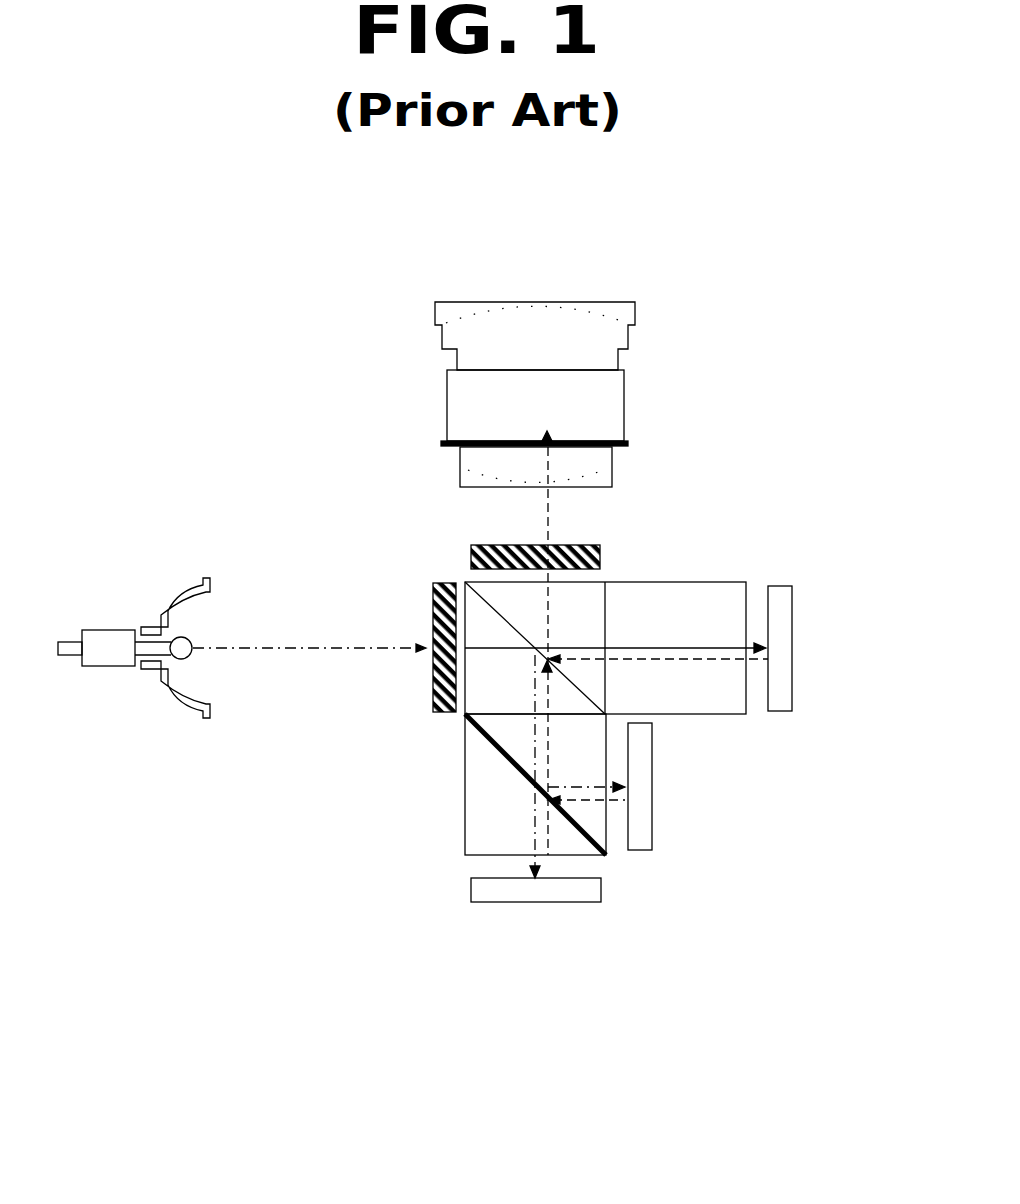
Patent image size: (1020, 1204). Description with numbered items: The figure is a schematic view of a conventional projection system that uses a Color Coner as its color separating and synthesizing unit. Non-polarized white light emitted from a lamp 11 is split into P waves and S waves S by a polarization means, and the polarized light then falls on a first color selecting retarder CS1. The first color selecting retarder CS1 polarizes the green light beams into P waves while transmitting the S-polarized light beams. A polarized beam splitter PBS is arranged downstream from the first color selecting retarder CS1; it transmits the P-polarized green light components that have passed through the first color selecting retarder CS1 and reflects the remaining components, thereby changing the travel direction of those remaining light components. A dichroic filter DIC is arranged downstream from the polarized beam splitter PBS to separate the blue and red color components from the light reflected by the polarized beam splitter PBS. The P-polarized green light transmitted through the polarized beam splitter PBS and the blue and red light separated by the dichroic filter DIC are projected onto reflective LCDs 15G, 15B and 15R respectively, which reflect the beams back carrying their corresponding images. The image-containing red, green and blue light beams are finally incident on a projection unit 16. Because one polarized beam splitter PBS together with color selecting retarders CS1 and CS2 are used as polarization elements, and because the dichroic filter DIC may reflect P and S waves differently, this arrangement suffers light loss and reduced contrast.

The lamp 11 is at (134, 617).
The S wave S is at (309, 630).
The projection unit 16 is at (568, 394).
The first color selecting retarder CS1 is at (396, 690).
The color selecting retarder CS2 is at (602, 507).
The polarized beam splitter PBS is at (573, 651).
The dichroic filter DIC is at (490, 766).
The reflective LCD 15G is at (827, 608).
The reflective LCD 15B is at (686, 786).
The reflective LCD 15R is at (522, 943).